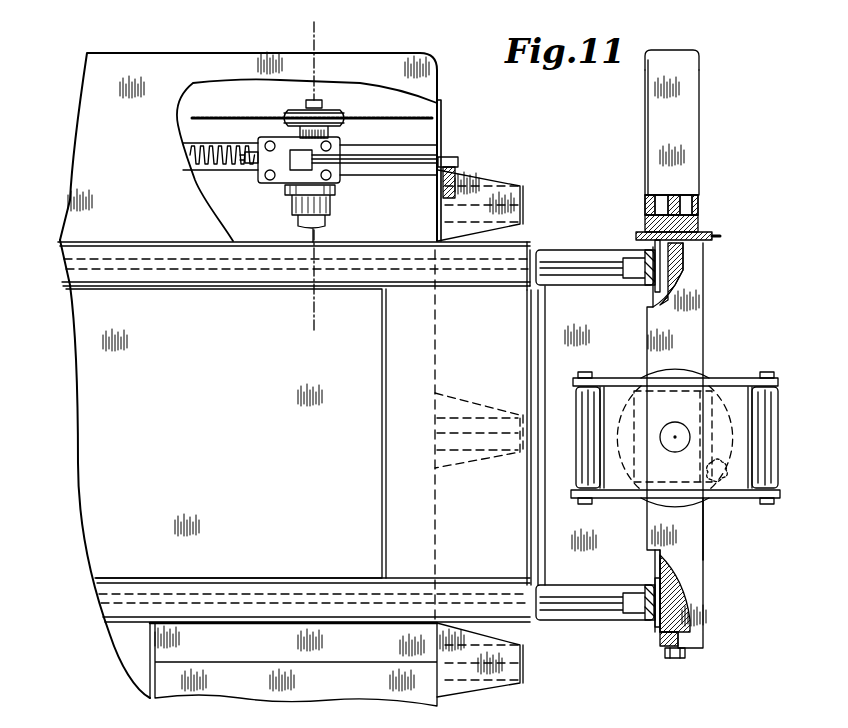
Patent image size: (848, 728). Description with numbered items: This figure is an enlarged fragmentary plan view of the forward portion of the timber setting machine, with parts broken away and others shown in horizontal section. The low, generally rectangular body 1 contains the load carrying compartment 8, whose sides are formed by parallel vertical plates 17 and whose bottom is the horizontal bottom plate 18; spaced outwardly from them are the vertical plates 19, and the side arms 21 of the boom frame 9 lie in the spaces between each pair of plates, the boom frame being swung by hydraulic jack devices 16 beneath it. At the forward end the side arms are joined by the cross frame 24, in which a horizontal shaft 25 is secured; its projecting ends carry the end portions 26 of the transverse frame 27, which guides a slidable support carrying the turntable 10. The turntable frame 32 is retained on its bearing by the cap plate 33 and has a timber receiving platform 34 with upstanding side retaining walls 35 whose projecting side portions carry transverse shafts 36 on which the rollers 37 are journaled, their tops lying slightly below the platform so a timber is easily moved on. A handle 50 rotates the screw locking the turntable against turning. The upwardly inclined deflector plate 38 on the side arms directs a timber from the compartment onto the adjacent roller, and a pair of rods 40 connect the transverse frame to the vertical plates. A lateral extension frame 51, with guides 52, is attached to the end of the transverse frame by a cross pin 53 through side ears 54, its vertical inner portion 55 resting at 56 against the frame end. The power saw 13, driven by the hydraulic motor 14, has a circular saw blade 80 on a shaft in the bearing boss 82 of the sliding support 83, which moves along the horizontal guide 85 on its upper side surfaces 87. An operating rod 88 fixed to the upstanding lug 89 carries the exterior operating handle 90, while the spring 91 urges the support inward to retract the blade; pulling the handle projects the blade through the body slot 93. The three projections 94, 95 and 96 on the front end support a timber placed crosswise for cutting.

The body 1 is at (74, 131).
The load carrying compartment 8 is at (127, 502).
The boom frame 9 is at (466, 600).
The turntable 10 is at (743, 492).
The power saw 13 is at (383, 117).
The hydraulic motor 14 is at (330, 218).
The hydraulic jack devices 16 is at (290, 22).
The vertical plates 17 is at (212, 287).
The horizontal bottom plate 18 is at (78, 463).
The vertical plates 19 is at (123, 241).
The side arms 21 is at (312, 270).
The cross frame 24 is at (660, 565).
The horizontal shaft 25 is at (675, 659).
The end portions 26 is at (658, 640).
The transverse frame 27 is at (705, 593).
The turntable frame 32 is at (623, 478).
The cap plate 33 is at (677, 452).
The platform 34 is at (637, 410).
The side retaining walls 35 is at (738, 380).
The transverse shafts 36 is at (586, 504).
The rollers 37 is at (573, 456).
The deflector plate 38 is at (513, 297).
The rods 40 is at (580, 272).
The handle 50 is at (673, 436).
The lateral extension frame 51 is at (700, 82).
The guides 52 is at (645, 128).
The cross pin 53 is at (692, 230).
The side ears 54 is at (638, 235).
The vertical inner portion 55 is at (700, 204).
The resting point 56 is at (650, 221).
The circular saw blade 80 is at (216, 117).
The bearing boss 82 is at (332, 138).
The sliding support 83 is at (278, 186).
The horizontal guide 85 is at (412, 178).
The upper side surfaces 87 is at (384, 152).
The operating rod 88 is at (393, 162).
The upstanding lug 89 is at (302, 162).
The operating handle 90 is at (452, 160).
The spring 91 is at (240, 166).
The body slot 93 is at (442, 118).
The projection 94 is at (497, 186).
The central projection 95 is at (470, 410).
The projection 96 is at (505, 678).